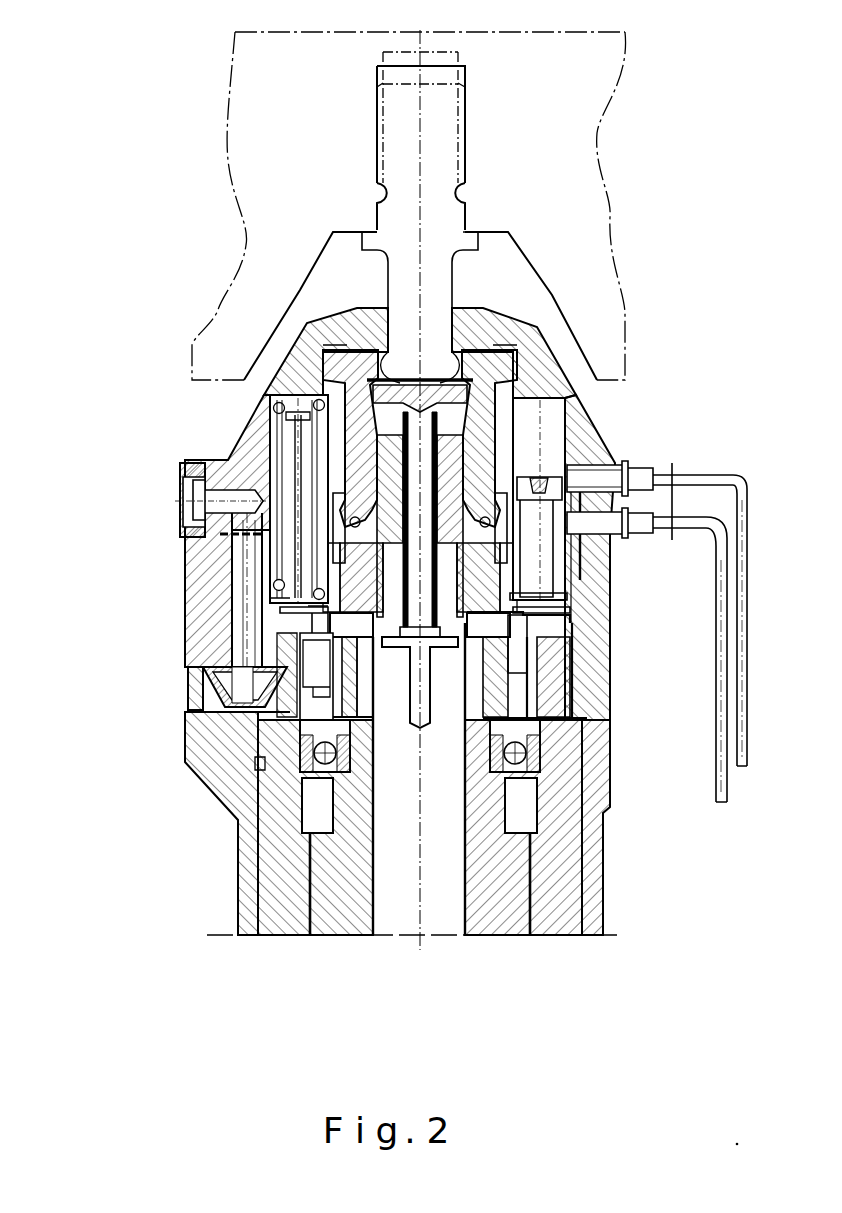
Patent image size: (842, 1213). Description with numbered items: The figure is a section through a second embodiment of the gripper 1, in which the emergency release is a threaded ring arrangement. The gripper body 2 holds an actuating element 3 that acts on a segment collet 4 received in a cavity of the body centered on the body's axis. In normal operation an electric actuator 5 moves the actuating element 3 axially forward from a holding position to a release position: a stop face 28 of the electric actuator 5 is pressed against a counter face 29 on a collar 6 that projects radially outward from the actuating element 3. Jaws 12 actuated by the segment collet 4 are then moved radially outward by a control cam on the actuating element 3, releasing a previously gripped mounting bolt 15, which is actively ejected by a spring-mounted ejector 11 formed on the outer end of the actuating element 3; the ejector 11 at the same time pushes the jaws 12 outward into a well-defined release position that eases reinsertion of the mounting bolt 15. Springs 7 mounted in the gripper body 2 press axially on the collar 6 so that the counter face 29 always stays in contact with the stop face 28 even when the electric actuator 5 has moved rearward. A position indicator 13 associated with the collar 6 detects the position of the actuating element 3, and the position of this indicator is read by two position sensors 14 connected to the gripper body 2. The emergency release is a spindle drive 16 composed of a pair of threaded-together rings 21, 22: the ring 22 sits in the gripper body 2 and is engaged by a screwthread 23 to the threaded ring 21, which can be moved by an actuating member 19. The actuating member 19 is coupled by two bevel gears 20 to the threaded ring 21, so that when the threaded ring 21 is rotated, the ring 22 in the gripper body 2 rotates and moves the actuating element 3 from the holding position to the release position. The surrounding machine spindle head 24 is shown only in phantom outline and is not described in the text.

The gripper 1 is at (230, 878).
The gripper body 2 is at (233, 762).
The actuating element 3 is at (352, 518).
The segment collet 4 is at (328, 424).
The electric actuator 5 is at (403, 897).
The collar 6 is at (200, 668).
The springs 7 is at (298, 500).
The ejector 11 is at (347, 306).
The jaws 12 is at (322, 353).
The position indicator 13 is at (545, 549).
The position sensors 14 is at (675, 512).
The mounting bolt 15 is at (413, 280).
The spindle drive 16 is at (226, 591).
The actuating member 19 is at (174, 496).
The bevel gears 20 is at (257, 550).
The threaded ring 21 is at (268, 785).
The ring 22 is at (297, 778).
The screwthread 23 is at (302, 606).
The machine spindle head 24 is at (262, 164).
The stop face 28 is at (432, 653).
The counter face 29 is at (554, 629).